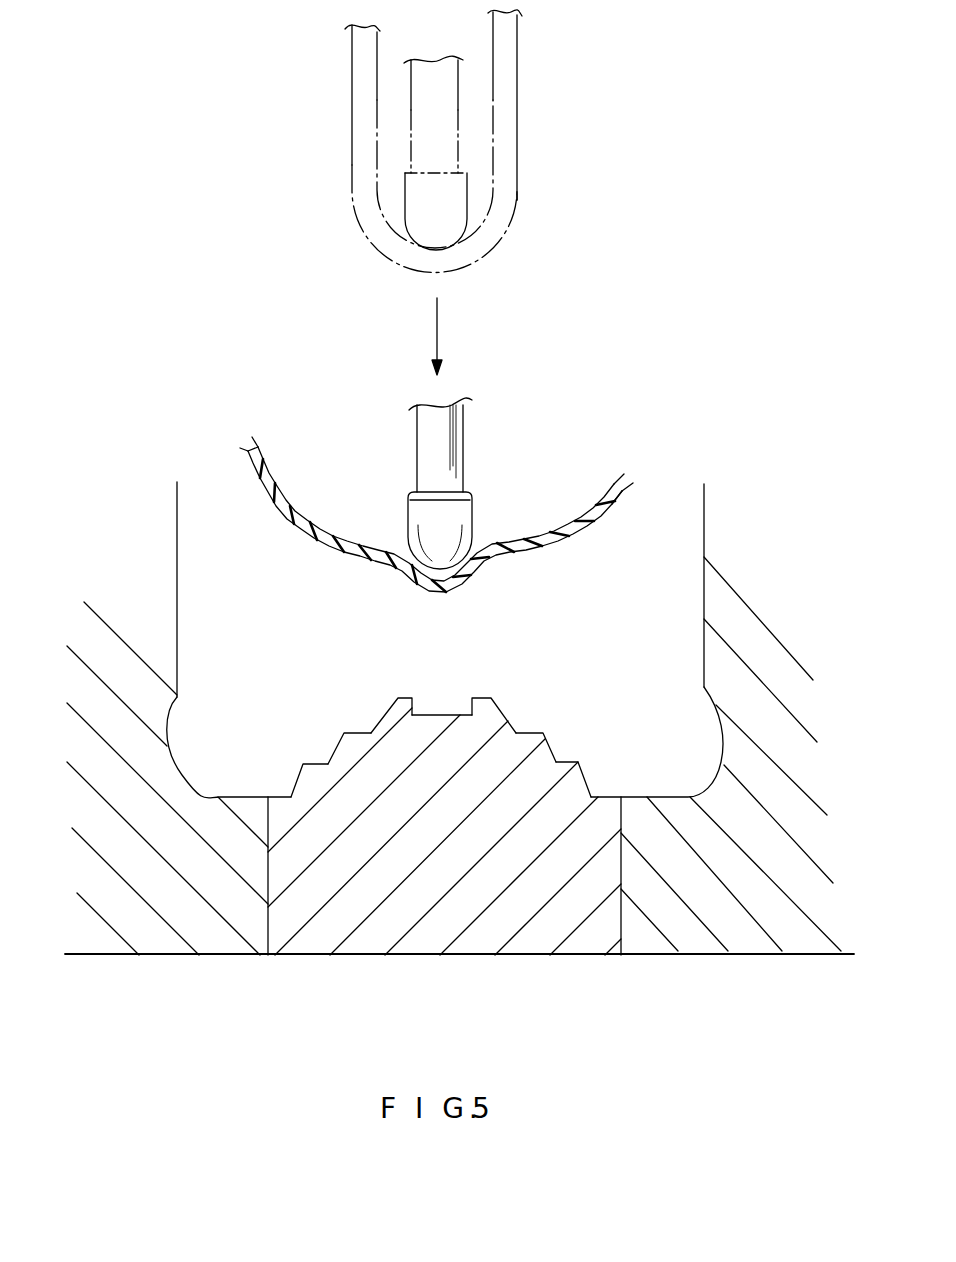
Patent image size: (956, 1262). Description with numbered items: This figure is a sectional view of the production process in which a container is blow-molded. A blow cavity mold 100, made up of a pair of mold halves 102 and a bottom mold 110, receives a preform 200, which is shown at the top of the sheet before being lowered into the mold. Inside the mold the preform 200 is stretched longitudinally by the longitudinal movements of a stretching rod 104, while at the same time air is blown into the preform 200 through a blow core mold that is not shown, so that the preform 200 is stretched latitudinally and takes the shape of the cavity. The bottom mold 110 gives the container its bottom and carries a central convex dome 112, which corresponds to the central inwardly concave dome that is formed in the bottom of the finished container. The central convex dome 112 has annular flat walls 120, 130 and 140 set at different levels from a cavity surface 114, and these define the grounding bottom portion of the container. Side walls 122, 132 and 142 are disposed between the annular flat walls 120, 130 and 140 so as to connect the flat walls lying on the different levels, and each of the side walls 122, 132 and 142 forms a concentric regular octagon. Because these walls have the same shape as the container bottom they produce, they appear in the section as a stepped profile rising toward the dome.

The blow cavity mold 100 is at (688, 975).
The mold halves 102 is at (193, 933).
The stretching rod 104 is at (457, 93).
The bottom mold 110 is at (432, 943).
The central convex dome 112 is at (525, 693).
The cavity surface 114 is at (277, 797).
The annular flat wall 120 is at (398, 694).
The side wall 122 is at (510, 716).
The annular flat wall 130 is at (349, 727).
The side wall 132 is at (557, 747).
The annular flat wall 140 is at (313, 760).
The side wall 142 is at (588, 782).
The preform 200 is at (517, 185).